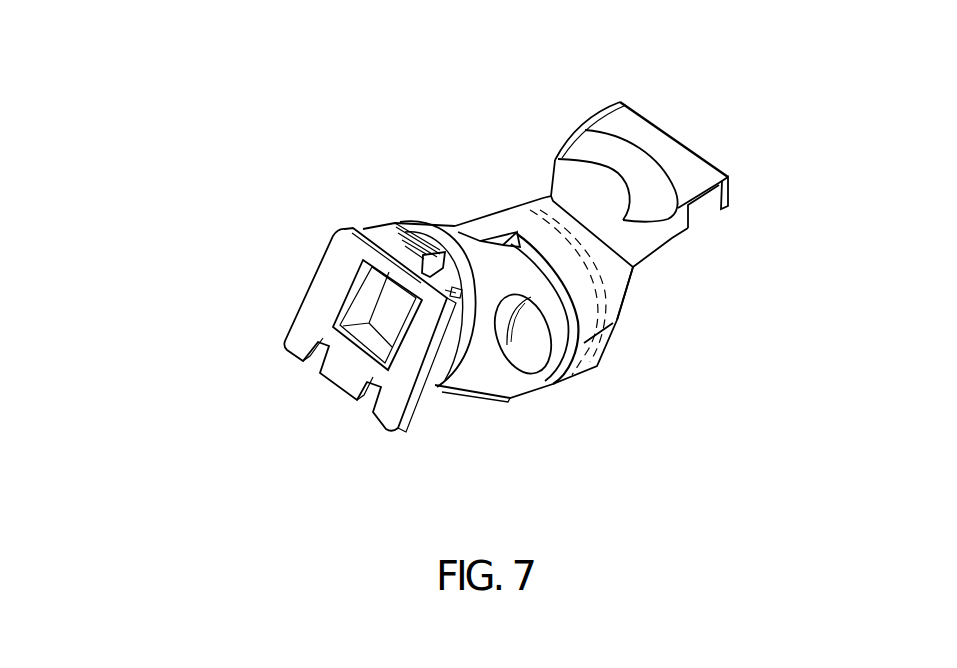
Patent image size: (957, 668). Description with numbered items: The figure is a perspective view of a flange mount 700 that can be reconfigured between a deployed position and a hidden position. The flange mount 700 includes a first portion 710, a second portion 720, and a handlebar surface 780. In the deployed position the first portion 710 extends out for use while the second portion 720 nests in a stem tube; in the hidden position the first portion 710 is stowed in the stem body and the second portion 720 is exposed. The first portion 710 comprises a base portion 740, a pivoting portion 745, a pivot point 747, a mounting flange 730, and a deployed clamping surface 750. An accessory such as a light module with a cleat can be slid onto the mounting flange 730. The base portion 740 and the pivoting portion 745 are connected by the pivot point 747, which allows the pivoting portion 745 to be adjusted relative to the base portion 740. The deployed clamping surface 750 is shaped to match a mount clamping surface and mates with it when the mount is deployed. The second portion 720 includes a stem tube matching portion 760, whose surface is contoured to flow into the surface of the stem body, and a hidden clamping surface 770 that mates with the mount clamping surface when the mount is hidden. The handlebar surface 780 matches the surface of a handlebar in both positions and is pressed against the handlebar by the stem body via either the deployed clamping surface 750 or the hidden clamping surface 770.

The flange mount 700 is at (190, 49).
The first portion 710 is at (523, 170).
The second portion 720 is at (645, 168).
The mounting flange 730 is at (340, 375).
The base portion 740 is at (493, 225).
The pivoting portion 745 is at (475, 375).
The pivot point 747 is at (517, 325).
The deployed clamping surface 750 is at (568, 233).
The stem tube matching portion 760 is at (663, 140).
The hidden clamping surface 770 is at (558, 190).
The handlebar surface 780 is at (665, 292).